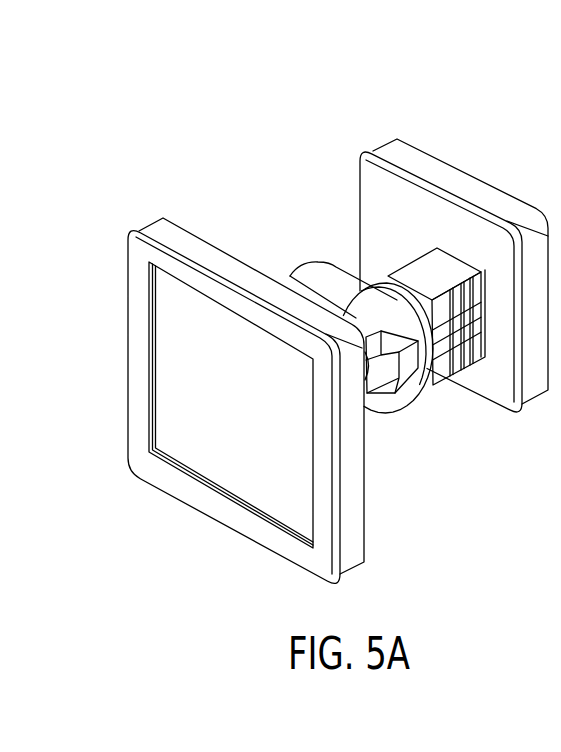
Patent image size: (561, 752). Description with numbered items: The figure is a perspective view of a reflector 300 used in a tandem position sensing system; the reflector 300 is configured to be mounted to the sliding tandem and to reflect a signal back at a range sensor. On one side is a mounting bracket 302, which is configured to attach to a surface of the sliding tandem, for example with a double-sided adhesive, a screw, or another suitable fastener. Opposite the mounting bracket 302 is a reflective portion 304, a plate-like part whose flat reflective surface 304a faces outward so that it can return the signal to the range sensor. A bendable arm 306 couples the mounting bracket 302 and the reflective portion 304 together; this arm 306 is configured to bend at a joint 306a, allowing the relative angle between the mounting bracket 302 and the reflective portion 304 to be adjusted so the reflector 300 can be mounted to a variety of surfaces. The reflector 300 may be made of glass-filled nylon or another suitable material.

The reflector 300 is at (480, 92).
The mounting bracket 302 is at (387, 147).
The reflective portion 304 is at (152, 222).
The flat reflective surface 304a is at (193, 373).
The bendable arm 306 is at (503, 365).
The joint 306a is at (317, 262).